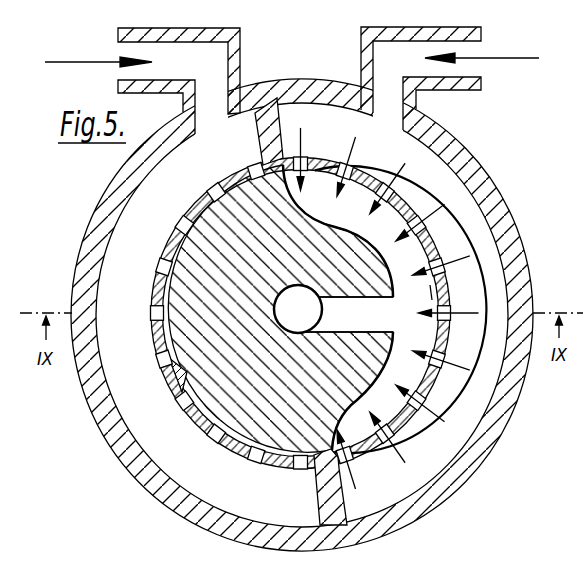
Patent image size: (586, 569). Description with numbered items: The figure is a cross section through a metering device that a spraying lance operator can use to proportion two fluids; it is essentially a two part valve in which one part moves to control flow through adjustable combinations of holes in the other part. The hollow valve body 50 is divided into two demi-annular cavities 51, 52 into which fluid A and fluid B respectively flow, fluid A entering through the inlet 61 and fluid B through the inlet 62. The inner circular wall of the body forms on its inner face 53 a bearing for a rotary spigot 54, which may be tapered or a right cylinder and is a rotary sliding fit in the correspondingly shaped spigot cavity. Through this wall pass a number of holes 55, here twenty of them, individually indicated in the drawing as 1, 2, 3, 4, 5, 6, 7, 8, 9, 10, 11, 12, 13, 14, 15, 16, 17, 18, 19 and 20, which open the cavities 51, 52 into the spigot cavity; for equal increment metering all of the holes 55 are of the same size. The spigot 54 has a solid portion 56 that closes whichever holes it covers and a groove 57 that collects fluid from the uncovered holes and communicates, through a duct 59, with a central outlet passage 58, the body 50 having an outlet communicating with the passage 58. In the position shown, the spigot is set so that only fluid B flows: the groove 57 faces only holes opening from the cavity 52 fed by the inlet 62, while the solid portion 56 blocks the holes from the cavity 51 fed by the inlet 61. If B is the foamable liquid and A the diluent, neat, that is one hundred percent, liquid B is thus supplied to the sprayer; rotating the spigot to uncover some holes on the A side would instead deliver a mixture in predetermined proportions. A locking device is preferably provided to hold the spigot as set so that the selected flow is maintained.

The ring opening 1 is at (309, 159).
The ring opening 2 is at (348, 167).
The ring opening 3 is at (387, 188).
The ring opening 4 is at (420, 222).
The ring opening 5 is at (441, 265).
The ring opening 6 is at (449, 307).
The ring opening 7 is at (441, 355).
The ring opening 8 is at (420, 403).
The ring opening 9 is at (387, 437).
The ring opening 10 is at (350, 459).
The ring opening 11 is at (297, 473).
The ring opening 12 is at (250, 466).
The ring opening 13 is at (209, 442).
The ring opening 14 is at (174, 407).
The ring opening 15 is at (152, 362).
The ring opening 16 is at (146, 315).
The ring opening 17 is at (153, 255).
The ring opening 18 is at (173, 221).
The ring opening 19 is at (207, 184).
The partition wall 20 is at (259, 169).
The hollow valve body 50 is at (508, 230).
The demi-annular cavity 51 is at (150, 170).
The demi-annular cavity 52 is at (495, 197).
The inner face 53 is at (338, 307).
The rotary spigot 54 is at (187, 331).
The holes 55 is at (152, 272).
The solid portion 56 is at (183, 379).
The groove 57 is at (424, 293).
The central outlet passage 58 is at (312, 321).
The duct 59 is at (368, 325).
The inlet 61 is at (117, 77).
The inlet 62 is at (470, 51).
The fluid A is at (110, 285).
The fluid B is at (410, 305).